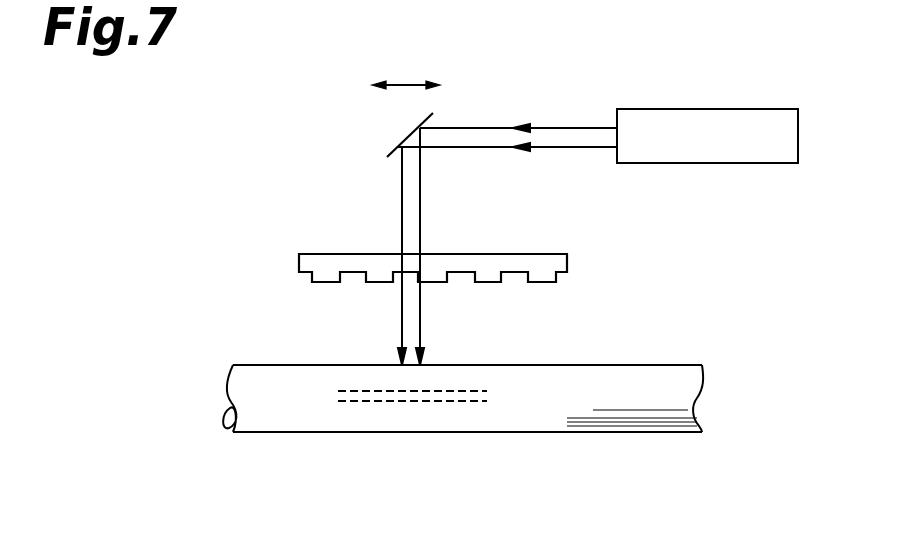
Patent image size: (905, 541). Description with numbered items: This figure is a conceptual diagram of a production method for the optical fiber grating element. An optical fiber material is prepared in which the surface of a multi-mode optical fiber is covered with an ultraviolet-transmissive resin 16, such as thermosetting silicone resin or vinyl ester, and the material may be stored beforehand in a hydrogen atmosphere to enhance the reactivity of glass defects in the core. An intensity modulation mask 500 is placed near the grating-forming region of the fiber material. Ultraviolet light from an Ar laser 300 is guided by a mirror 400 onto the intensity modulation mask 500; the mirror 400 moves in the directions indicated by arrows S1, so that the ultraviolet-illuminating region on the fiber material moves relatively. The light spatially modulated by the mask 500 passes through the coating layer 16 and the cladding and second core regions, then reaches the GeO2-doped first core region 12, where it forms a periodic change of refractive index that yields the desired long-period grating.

The Ar laser 300 is at (733, 108).
The mirror 400 is at (398, 150).
The arrows S1 is at (409, 83).
The intensity modulation mask 500 is at (568, 263).
The ultraviolet-transmissive resin coating layer 16 is at (627, 372).
The first core region 12 is at (427, 402).